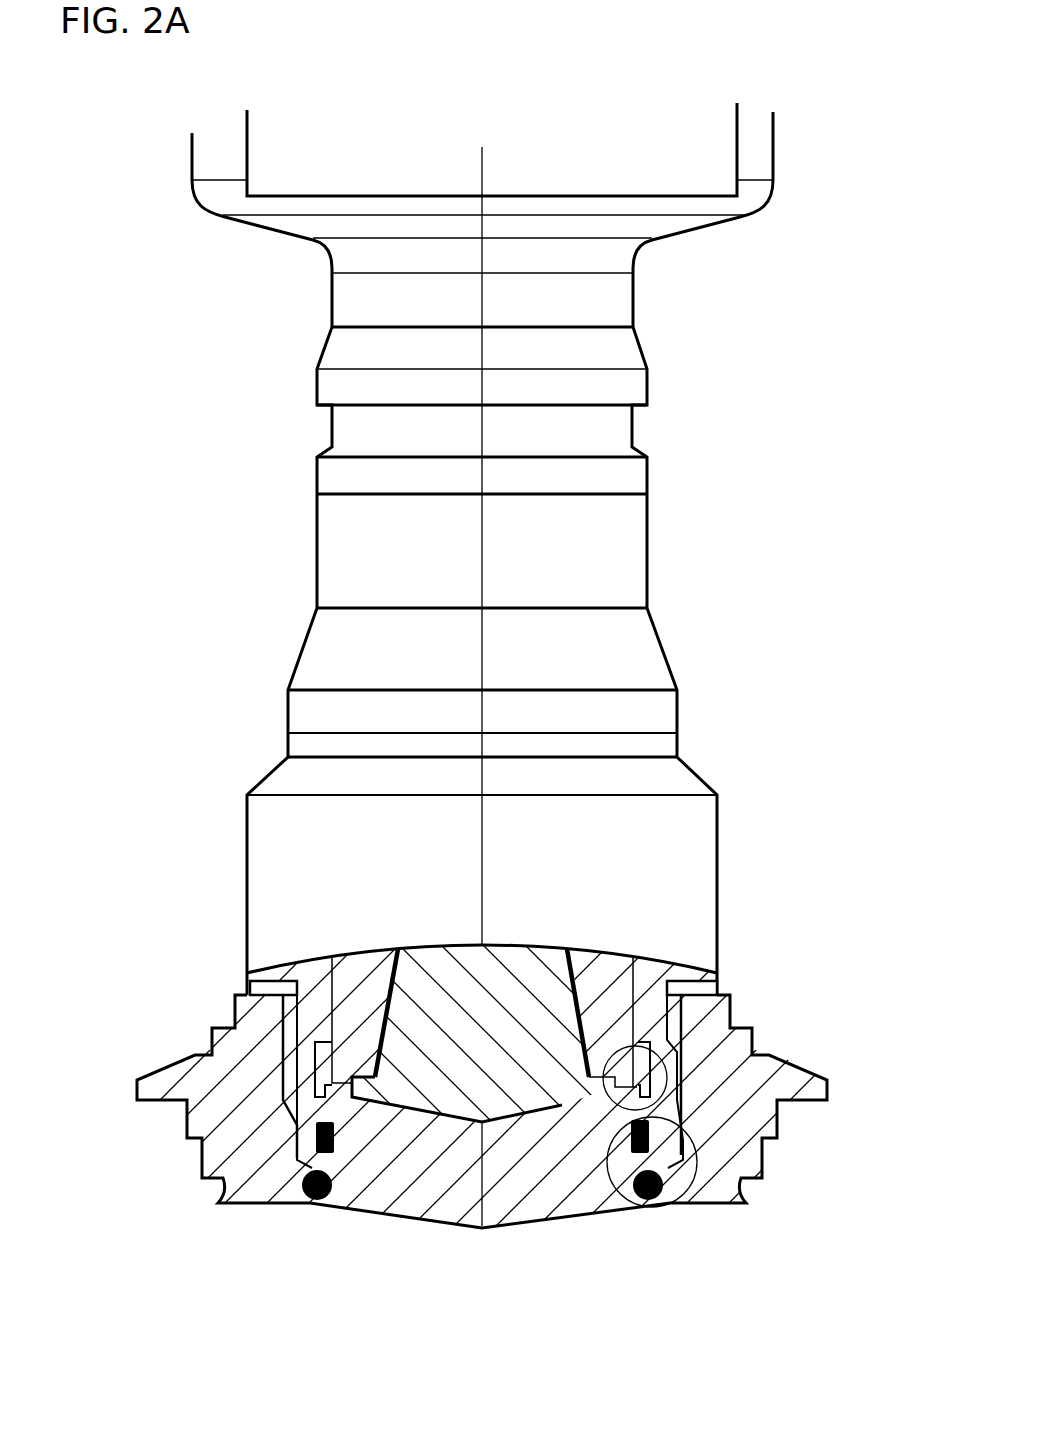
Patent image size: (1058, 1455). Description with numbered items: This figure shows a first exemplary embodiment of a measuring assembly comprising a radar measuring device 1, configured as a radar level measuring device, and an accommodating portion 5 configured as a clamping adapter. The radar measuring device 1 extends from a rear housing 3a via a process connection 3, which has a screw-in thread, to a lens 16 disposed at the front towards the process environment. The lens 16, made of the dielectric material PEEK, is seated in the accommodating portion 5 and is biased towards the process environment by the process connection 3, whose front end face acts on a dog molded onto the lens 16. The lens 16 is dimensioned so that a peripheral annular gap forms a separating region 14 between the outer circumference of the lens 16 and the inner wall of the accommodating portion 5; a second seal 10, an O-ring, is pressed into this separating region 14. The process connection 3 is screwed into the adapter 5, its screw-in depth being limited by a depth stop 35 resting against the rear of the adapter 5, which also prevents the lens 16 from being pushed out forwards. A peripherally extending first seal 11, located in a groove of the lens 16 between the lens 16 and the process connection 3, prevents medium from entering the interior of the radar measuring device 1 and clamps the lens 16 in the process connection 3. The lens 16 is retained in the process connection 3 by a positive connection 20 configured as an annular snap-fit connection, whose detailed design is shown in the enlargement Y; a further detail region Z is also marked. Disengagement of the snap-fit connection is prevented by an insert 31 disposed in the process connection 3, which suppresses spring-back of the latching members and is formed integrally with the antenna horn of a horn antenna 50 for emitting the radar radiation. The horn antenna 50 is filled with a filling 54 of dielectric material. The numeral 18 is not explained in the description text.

The radar measuring device 1 is at (796, 312).
The process connection 3 is at (688, 830).
The rear housing 3a is at (752, 167).
The accommodating portion 5 is at (733, 1085).
The second seal 10 is at (310, 1203).
The first seal 11 is at (317, 1137).
The separating region 14 is at (321, 1228).
The lens 16 is at (593, 1193).
The contact point 18 is at (315, 1203).
The positive connection 20 is at (658, 1050).
The insert 31 is at (600, 1010).
The depth stop 35 is at (705, 984).
The horn antenna 50 is at (366, 1003).
The filling 54 is at (558, 1041).
The enlargement Y is at (612, 1100).
The detail Z is at (630, 1162).